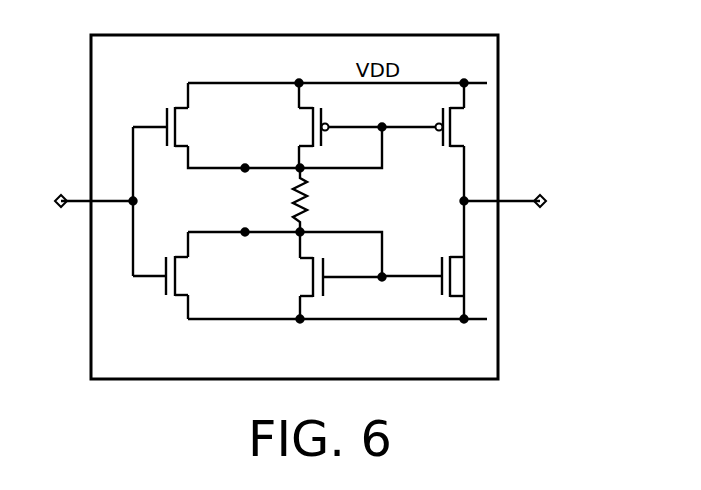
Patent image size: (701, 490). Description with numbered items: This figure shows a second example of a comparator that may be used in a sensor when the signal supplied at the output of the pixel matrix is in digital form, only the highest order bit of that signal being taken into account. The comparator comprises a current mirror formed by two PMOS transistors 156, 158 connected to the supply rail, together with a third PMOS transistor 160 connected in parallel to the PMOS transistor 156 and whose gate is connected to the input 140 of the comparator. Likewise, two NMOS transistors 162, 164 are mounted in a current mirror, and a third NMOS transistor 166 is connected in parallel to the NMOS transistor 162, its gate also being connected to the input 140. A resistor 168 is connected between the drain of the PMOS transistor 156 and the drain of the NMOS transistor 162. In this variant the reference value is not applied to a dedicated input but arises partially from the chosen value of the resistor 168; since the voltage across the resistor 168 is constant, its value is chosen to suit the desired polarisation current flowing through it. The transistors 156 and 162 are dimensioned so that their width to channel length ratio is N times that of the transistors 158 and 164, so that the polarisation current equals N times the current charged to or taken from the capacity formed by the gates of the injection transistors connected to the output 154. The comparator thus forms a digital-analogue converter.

The input 140 is at (102, 202).
The output 154 is at (546, 198).
The PMOS transistor 156 is at (310, 110).
The PMOS transistor 158 is at (458, 130).
The third PMOS transistor 160 is at (187, 131).
The NMOS transistor 162 is at (303, 290).
The NMOS transistor 164 is at (460, 270).
The third NMOS transistor 166 is at (172, 283).
The resistor 168 is at (310, 208).